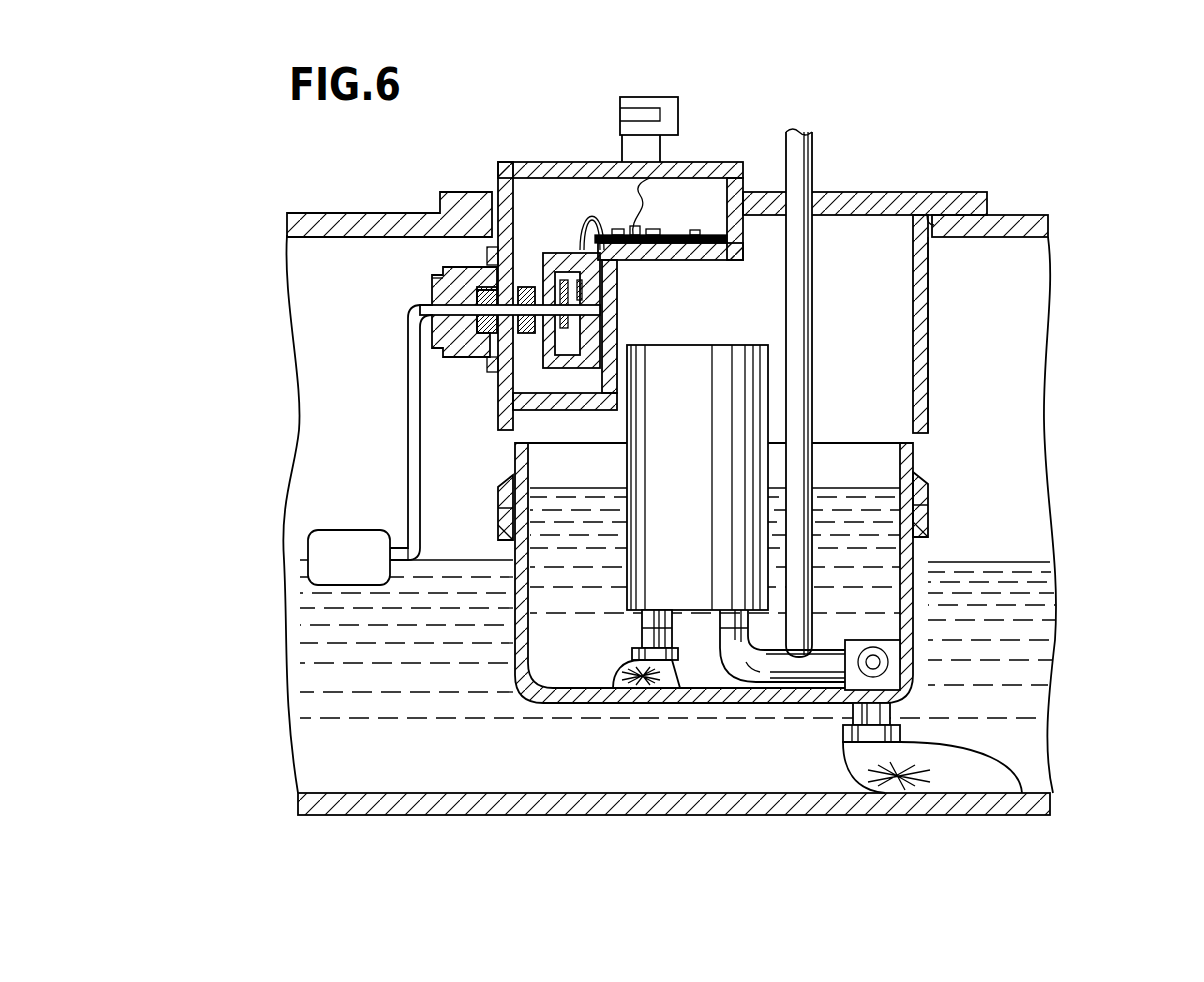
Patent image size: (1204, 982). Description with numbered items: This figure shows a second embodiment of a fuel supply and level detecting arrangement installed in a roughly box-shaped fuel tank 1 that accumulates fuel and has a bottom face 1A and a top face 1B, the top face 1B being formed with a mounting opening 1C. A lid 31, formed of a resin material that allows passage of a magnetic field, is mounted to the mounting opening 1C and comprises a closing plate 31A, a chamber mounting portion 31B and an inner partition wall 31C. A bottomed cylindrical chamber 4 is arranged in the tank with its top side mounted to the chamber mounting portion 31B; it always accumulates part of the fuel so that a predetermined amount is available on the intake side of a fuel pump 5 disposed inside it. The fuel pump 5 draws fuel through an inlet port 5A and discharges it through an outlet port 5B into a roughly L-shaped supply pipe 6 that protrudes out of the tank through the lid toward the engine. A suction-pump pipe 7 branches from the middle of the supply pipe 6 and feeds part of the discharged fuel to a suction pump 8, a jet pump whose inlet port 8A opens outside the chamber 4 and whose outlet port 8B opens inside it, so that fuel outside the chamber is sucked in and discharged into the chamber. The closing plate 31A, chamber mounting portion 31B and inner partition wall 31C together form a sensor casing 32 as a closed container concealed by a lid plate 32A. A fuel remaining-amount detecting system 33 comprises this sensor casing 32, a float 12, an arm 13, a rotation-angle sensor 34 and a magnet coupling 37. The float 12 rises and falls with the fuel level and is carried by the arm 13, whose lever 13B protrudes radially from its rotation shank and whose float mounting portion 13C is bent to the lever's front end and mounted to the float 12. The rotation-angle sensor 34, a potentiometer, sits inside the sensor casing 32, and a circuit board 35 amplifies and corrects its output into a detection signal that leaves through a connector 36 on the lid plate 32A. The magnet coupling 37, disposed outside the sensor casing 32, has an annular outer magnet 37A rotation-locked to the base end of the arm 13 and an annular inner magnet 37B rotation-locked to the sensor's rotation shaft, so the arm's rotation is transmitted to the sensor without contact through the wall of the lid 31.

The fuel tank 1 is at (313, 218).
The bottom face 1A is at (903, 808).
The top face 1B is at (1015, 225).
The mounting opening 1C is at (928, 217).
The chamber 4 is at (530, 690).
The fuel pump 5 is at (688, 592).
The inlet port 5A is at (652, 620).
The outlet port 5B is at (720, 620).
The supply pipe 6 is at (798, 367).
The suction-pump pipe 7 is at (820, 660).
The suction pump 8 is at (888, 648).
The inlet port 8A is at (873, 712).
The outlet port 8B is at (883, 668).
The float 12 is at (343, 562).
The arm 13 is at (410, 320).
The lever 13B is at (408, 545).
The float mounting portion 13C is at (390, 560).
The lid 31 is at (915, 322).
The closing plate 31A is at (835, 200).
The chamber mounting portion 31B is at (925, 272).
The inner partition wall 31C is at (547, 400).
The sensor casing 32 is at (712, 165).
The lid plate 32A is at (505, 175).
The fuel remaining-amount detecting system 33 is at (438, 266).
The rotation-angle sensor 34 is at (560, 252).
The circuit board 35 is at (620, 232).
The connector 36 is at (672, 112).
The magnet coupling 37 is at (557, 325).
The outer magnet 37A is at (478, 272).
The inner magnet 37B is at (527, 285).